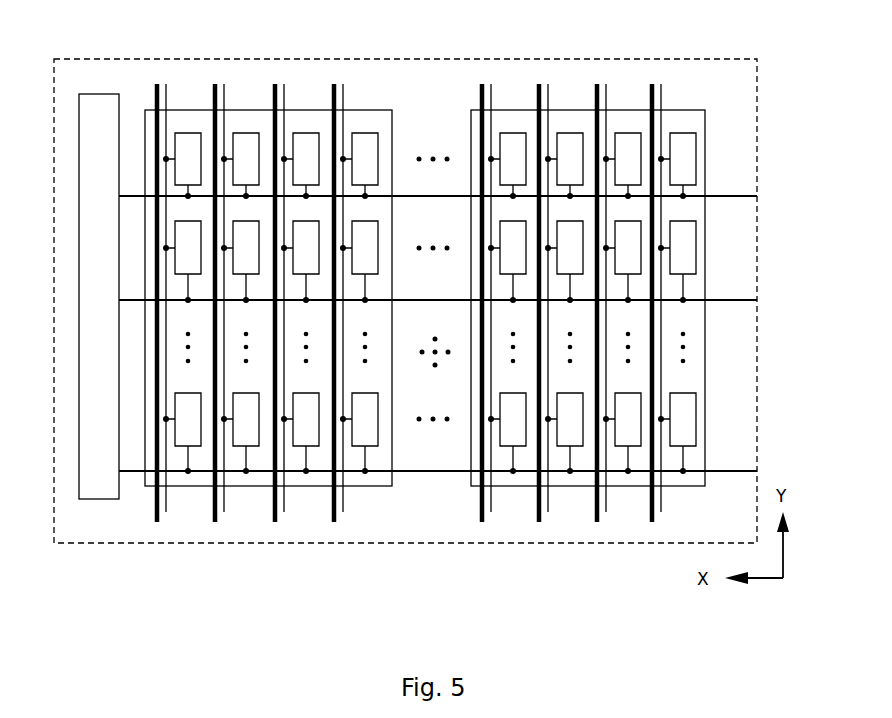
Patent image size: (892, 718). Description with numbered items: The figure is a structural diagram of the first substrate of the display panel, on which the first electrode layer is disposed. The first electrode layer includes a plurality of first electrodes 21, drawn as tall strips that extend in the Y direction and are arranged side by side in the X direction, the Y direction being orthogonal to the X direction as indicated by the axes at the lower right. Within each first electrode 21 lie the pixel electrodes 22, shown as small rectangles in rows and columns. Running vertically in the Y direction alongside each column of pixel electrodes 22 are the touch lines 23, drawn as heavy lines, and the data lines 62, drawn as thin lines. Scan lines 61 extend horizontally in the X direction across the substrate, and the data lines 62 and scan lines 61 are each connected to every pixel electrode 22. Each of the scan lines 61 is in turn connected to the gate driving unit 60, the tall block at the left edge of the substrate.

The first electrode 21 is at (682, 123).
The pixel electrode 22 is at (685, 167).
The touch line 23 is at (651, 84).
The gate driving unit 60 is at (99, 296).
The scan line 61 is at (735, 300).
The data line 62 is at (661, 84).